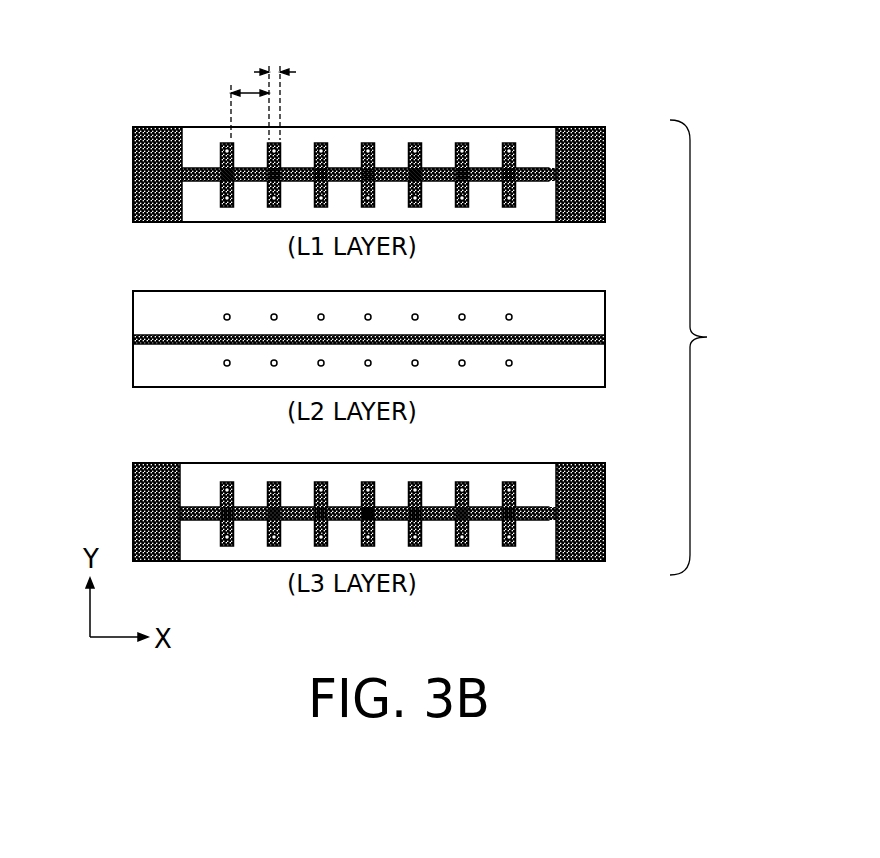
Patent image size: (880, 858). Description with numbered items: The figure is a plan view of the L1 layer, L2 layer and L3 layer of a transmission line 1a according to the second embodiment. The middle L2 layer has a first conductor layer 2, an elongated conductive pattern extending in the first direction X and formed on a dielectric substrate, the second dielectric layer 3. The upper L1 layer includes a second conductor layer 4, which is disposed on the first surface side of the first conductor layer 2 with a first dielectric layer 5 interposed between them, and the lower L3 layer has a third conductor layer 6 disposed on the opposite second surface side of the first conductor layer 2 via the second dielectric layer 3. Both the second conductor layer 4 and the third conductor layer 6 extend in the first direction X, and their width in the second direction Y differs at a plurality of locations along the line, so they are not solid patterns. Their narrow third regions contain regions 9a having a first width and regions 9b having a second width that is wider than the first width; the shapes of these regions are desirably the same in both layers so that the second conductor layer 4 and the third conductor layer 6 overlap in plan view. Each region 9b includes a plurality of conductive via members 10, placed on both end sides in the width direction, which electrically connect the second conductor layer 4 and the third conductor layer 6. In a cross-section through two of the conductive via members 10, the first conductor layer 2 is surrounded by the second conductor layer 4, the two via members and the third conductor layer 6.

The transmission line 1a is at (708, 347).
The first conductor layer 2 is at (598, 336).
The second dielectric layer 3 is at (595, 365).
The second conductor layer 4 is at (605, 172).
The first dielectric layer 5 is at (492, 208).
The third conductor layer 6 is at (605, 513).
The region having a first width 9a is at (246, 90).
The region having a second width 9b is at (278, 71).
The conductive via member 10 is at (461, 142).